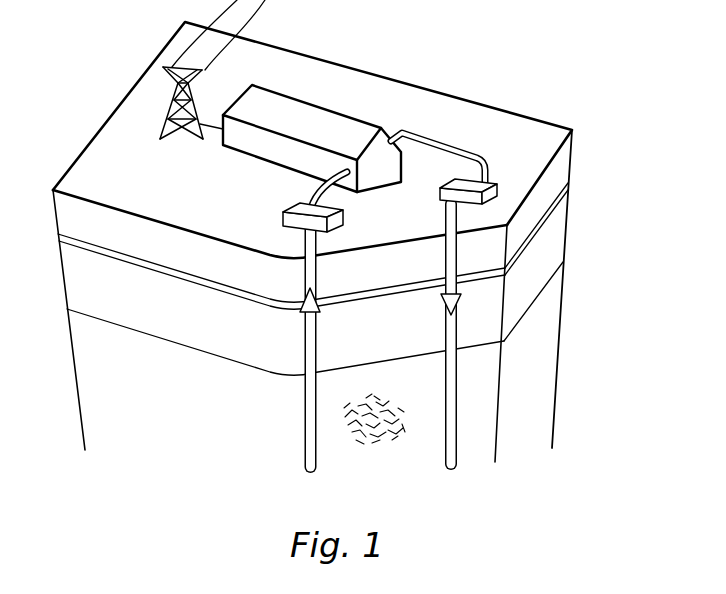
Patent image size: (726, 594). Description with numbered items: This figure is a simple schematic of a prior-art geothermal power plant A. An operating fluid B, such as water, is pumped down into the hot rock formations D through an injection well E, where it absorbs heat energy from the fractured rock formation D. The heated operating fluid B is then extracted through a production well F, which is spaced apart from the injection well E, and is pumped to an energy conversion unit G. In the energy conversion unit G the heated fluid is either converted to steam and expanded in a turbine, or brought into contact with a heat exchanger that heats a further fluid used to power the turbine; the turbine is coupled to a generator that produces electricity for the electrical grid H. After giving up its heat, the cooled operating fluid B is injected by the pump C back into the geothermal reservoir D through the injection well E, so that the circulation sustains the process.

The geothermal power plant A is at (471, 68).
The operating fluid B is at (462, 303).
The pump C is at (500, 188).
The hot rock formations D is at (483, 400).
The injection well E is at (458, 368).
The production well F is at (303, 406).
The energy conversion unit G is at (315, 104).
The electrical grid H is at (174, 67).